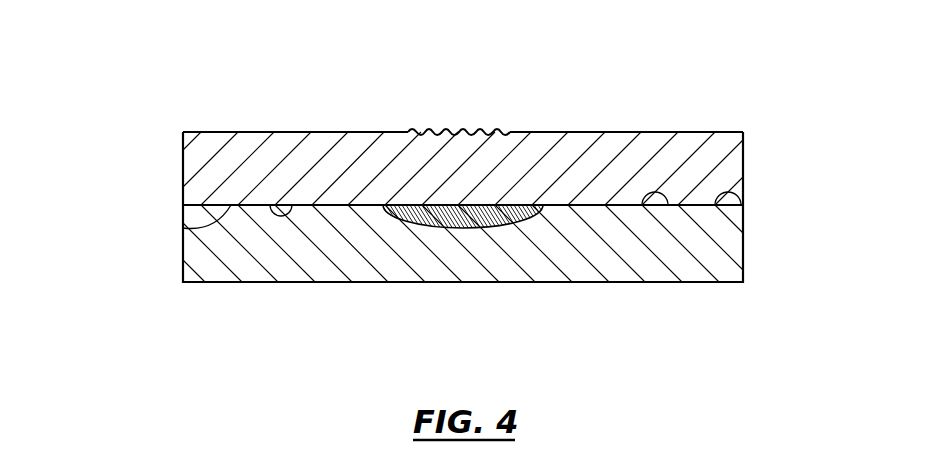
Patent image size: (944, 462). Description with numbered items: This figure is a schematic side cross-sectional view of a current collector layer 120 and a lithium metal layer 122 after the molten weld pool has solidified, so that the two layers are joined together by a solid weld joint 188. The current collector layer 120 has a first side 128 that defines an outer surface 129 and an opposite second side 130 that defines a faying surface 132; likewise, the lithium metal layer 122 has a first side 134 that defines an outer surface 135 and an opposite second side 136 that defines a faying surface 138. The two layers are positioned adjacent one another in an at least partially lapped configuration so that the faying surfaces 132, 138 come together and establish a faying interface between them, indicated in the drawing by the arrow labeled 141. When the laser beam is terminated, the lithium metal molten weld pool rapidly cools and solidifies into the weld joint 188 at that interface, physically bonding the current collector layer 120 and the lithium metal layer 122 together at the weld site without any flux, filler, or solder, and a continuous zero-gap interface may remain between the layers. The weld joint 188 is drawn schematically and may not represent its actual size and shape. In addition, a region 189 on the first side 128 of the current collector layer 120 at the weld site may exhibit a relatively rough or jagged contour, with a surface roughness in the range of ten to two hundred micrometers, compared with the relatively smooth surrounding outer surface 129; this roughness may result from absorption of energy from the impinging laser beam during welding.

The current collector layer 120 is at (743, 152).
The lithium metal layer 122 is at (743, 263).
The first side of the current collector layer 128 is at (245, 130).
The outer surface of the current collector layer 129 is at (633, 132).
The second side of the current collector layer 130 is at (288, 206).
The faying surface of the current collector layer 132 is at (183, 229).
The first side of the lithium metal layer 134 is at (608, 283).
The outer surface of the lithium metal layer 135 is at (290, 283).
The second side of the lithium metal layer 136 is at (667, 197).
The faying surface of the lithium metal layer 138 is at (743, 195).
The interface 141 is at (172, 205).
The weld joint 188 is at (462, 228).
The region on the first side of the current collector layer 189 is at (456, 130).